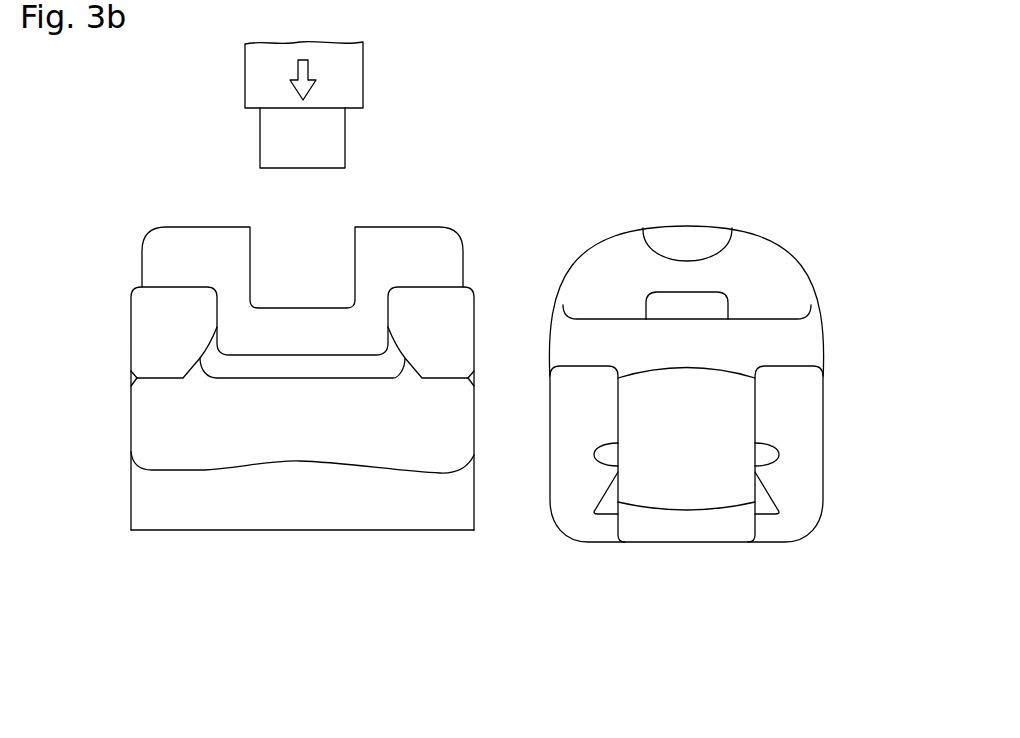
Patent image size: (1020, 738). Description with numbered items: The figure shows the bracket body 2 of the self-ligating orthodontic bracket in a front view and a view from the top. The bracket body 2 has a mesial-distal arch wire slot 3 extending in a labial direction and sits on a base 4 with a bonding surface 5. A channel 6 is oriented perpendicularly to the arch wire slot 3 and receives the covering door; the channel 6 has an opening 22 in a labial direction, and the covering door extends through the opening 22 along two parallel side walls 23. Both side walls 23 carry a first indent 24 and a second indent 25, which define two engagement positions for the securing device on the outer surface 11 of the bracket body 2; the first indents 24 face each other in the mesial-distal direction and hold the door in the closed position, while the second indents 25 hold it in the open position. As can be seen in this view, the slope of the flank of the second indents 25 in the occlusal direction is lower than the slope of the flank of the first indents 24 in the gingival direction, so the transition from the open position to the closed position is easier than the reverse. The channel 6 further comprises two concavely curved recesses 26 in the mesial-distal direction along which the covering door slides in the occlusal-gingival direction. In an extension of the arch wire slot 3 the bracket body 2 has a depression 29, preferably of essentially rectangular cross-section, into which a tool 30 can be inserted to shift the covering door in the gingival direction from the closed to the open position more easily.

The bracket body 2 is at (153, 568).
The arch wire slot 3 is at (788, 345).
The base 4 is at (315, 518).
The bonding surface 5 is at (408, 530).
The channel 6 is at (247, 367).
The outer surface 11 is at (795, 417).
The opening 22 is at (378, 296).
The side wall 23 is at (217, 310).
The first indent 24 is at (618, 471).
The second indent 25 is at (594, 511).
The recess 26 is at (200, 358).
The depression 29 is at (323, 267).
The tool 30 is at (345, 82).